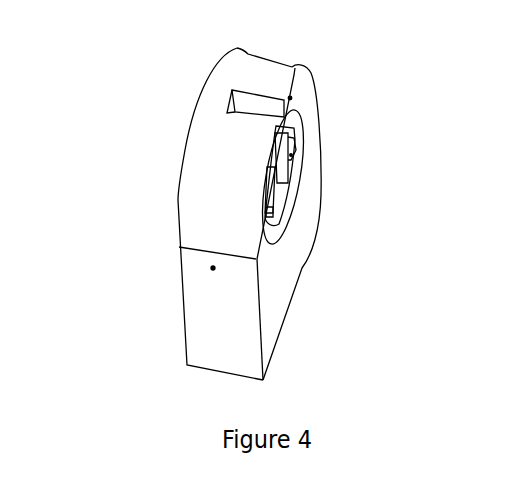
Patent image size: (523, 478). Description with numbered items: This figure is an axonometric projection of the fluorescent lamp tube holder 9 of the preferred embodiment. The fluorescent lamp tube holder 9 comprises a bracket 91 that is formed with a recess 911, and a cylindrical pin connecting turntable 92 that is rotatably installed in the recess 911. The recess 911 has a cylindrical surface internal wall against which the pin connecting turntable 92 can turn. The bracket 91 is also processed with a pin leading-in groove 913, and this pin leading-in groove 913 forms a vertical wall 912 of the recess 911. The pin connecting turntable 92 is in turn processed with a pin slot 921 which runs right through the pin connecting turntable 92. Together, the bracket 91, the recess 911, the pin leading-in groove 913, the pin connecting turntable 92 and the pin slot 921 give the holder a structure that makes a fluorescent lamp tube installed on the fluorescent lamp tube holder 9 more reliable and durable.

The fluorescent lamp tube holder 9 is at (147, 105).
The bracket 91 is at (213, 268).
The recess 911 is at (293, 121).
The vertical wall 912 is at (290, 98).
The pin leading-in groove 913 is at (249, 105).
The pin connecting turntable 92 is at (300, 164).
The pin slot 921 is at (282, 177).